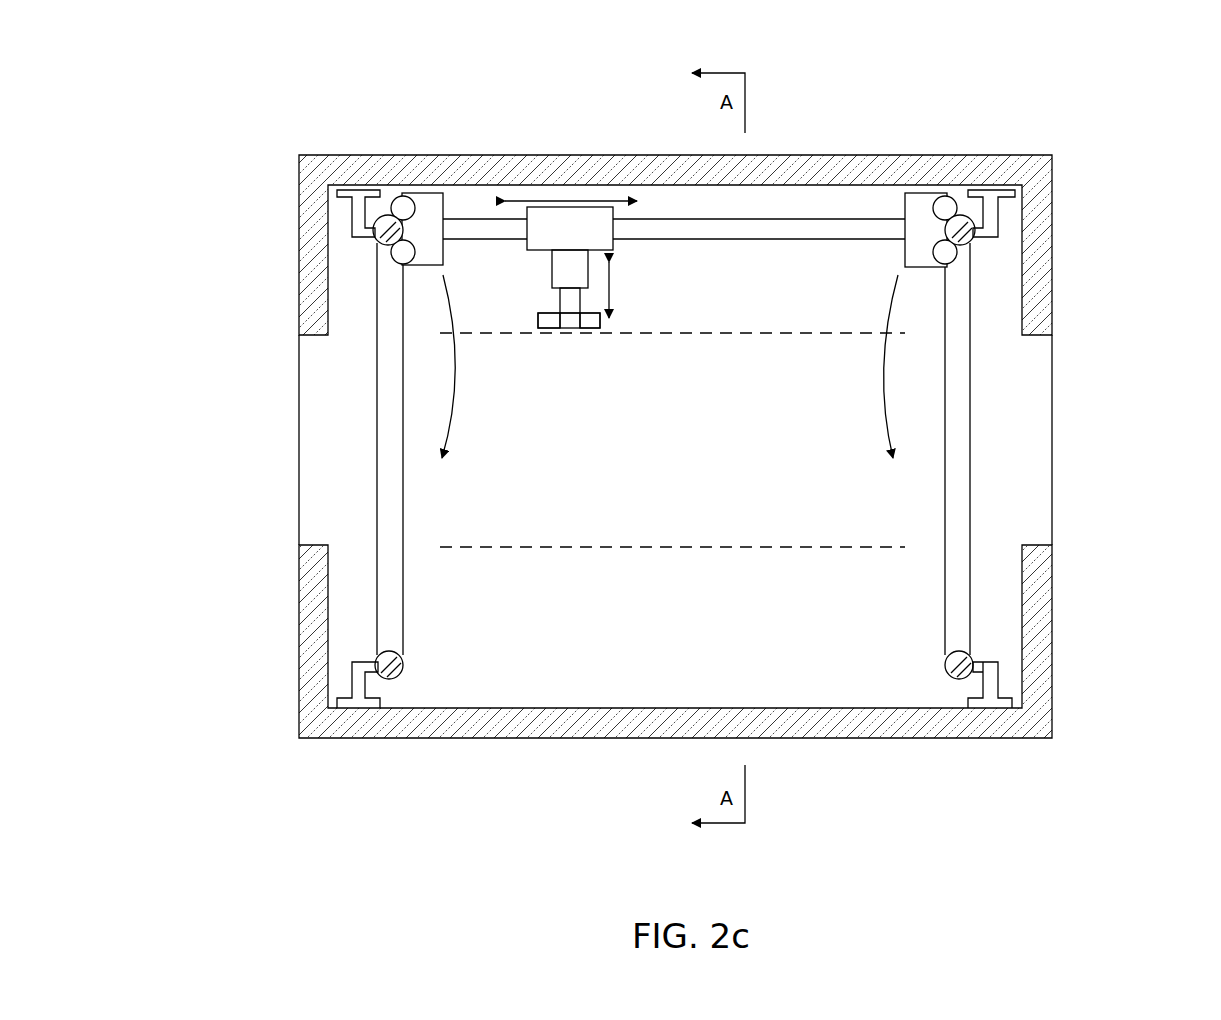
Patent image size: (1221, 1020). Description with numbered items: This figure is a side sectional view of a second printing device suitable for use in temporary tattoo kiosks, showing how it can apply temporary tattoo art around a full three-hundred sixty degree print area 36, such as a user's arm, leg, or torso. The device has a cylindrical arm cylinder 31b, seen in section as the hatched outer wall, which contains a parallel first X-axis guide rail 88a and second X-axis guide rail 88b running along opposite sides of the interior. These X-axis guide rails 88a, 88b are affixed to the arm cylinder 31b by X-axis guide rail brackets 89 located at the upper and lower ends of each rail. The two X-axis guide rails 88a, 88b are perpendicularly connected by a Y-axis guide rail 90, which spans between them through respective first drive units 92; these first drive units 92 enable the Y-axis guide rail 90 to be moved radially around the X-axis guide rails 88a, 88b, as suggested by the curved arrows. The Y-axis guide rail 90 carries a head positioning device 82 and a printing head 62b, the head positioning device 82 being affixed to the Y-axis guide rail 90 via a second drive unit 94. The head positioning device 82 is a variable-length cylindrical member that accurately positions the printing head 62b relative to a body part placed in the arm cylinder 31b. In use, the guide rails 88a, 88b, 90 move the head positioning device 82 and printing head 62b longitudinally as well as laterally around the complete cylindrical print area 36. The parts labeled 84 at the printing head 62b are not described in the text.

The arm cylinder 31b is at (800, 152).
The Y-axis guide rail 90 is at (815, 228).
The first drive unit 92 is at (570, 225).
The head positioning device 82 is at (572, 302).
The printing head 62b is at (572, 322).
The pads 84 is at (552, 322).
The print area 36 is at (665, 552).
The second drive unit 94 is at (432, 198).
The first X-axis guide rail 88a is at (387, 230).
The second X-axis guide rail 88b is at (950, 350).
The X-axis guide rail bracket 89 is at (355, 215).